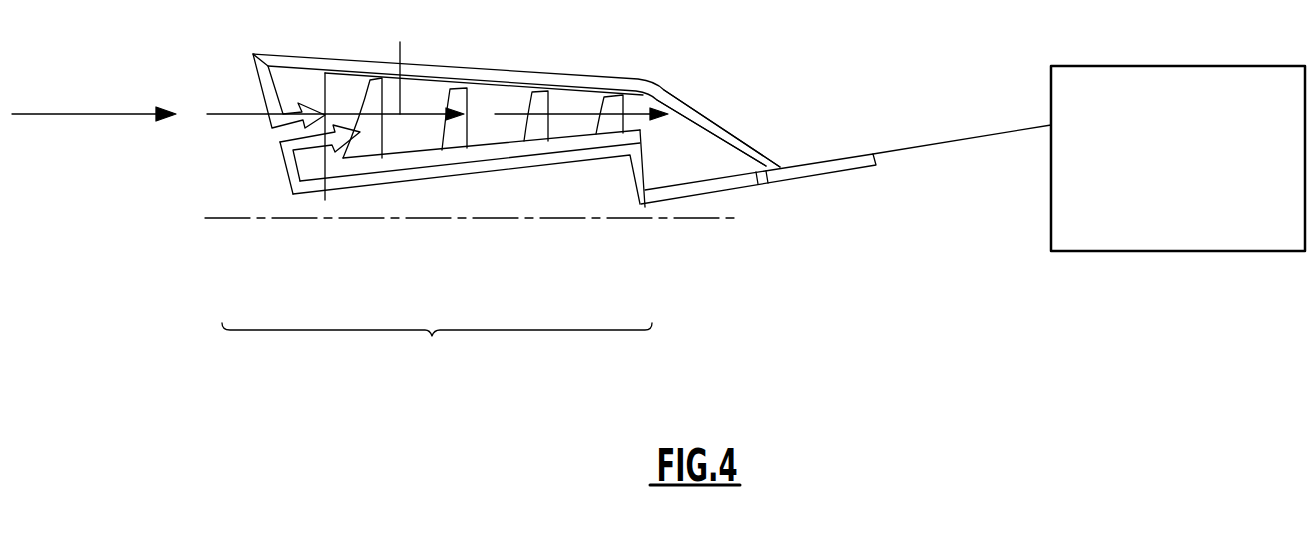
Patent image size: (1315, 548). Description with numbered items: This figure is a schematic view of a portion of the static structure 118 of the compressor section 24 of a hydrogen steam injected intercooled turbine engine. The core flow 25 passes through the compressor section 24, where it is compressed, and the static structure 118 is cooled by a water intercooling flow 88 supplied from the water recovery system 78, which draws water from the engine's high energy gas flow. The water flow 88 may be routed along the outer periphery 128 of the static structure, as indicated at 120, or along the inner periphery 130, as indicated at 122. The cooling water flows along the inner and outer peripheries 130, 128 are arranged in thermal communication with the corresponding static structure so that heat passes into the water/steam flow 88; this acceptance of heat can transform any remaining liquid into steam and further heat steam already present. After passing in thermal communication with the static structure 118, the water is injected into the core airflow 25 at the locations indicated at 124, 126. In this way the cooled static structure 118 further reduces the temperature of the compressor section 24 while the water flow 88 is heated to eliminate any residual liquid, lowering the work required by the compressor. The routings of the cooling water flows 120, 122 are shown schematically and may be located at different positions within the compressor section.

The compressor section 24 is at (432, 336).
The core flow 25 is at (400, 42).
The water recovery system 78 is at (1164, 201).
The water intercooling flow 88 is at (782, 168).
The static structure 118 is at (312, 80).
The cooling water flow along outer periphery 120 is at (505, 77).
The cooling water flow along inner periphery 122 is at (380, 178).
The water injection location 124 is at (256, 163).
The water injection location 126 is at (695, 108).
The outer periphery 128 is at (427, 62).
The inner periphery 130 is at (526, 160).